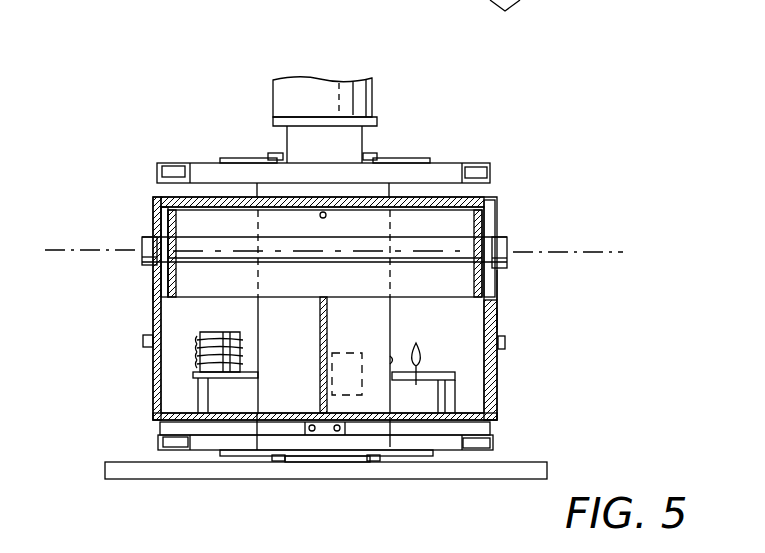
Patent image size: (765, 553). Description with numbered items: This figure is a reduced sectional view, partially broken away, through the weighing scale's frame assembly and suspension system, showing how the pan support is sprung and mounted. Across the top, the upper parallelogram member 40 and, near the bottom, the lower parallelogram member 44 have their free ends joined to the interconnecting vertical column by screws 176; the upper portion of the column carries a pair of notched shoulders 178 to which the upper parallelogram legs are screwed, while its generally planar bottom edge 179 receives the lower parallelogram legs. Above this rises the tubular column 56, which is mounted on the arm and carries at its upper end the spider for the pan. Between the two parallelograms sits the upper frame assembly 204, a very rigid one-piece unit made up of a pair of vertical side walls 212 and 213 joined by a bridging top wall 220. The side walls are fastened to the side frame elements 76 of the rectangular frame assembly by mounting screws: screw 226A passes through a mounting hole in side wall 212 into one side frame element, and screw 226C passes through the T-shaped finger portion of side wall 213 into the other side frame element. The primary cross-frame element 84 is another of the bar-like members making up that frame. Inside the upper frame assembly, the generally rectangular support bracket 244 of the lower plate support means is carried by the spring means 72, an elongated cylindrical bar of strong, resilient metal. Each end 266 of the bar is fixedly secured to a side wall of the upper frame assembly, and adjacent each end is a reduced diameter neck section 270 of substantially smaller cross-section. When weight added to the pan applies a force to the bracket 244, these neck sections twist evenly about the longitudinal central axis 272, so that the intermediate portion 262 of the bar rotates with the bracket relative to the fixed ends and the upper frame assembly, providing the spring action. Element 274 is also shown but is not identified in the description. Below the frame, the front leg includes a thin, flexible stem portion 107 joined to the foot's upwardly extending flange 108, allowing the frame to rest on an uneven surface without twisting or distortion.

The tubular column 56 is at (347, 83).
The screws 176 is at (273, 153).
The notched shoulders 178 is at (268, 158).
The upper parallelogram member 40 is at (173, 163).
The bridging top wall 220 is at (487, 197).
The reduced diameter neck sections 270 is at (153, 223).
The support bracket 244 is at (178, 224).
The intermediate portion 262 is at (276, 256).
The spring means 72 is at (334, 264).
The ends of the bar 266 is at (143, 258).
The longitudinal central axis 272 is at (67, 252).
The upper frame assembly 204 is at (498, 286).
The side wall 212 is at (497, 318).
The side wall 213 is at (152, 293).
The mounting screw 226C is at (145, 338).
The mounting screw 226A is at (505, 342).
The side frame elements 76 is at (192, 376).
The primary cross-frame element 84 is at (457, 380).
The partition 274 is at (328, 345).
The lower parallelogram member 44 is at (160, 442).
The bottom edge 179 is at (296, 438).
The stem portion 107 is at (328, 462).
The flange 108 is at (360, 470).